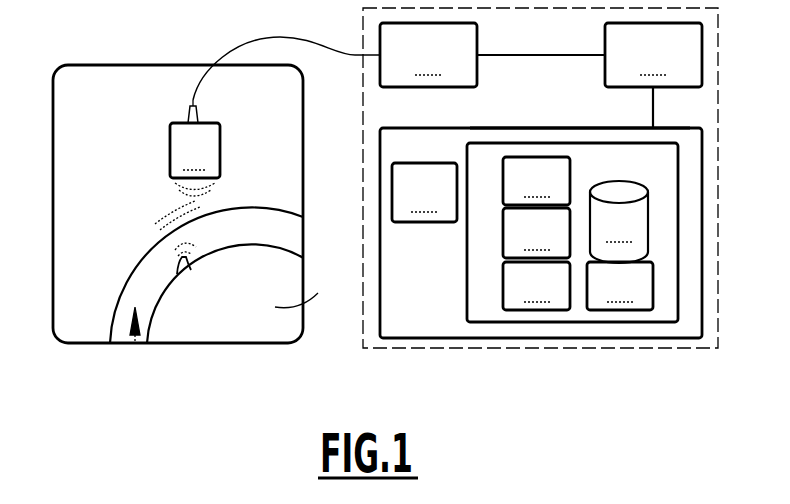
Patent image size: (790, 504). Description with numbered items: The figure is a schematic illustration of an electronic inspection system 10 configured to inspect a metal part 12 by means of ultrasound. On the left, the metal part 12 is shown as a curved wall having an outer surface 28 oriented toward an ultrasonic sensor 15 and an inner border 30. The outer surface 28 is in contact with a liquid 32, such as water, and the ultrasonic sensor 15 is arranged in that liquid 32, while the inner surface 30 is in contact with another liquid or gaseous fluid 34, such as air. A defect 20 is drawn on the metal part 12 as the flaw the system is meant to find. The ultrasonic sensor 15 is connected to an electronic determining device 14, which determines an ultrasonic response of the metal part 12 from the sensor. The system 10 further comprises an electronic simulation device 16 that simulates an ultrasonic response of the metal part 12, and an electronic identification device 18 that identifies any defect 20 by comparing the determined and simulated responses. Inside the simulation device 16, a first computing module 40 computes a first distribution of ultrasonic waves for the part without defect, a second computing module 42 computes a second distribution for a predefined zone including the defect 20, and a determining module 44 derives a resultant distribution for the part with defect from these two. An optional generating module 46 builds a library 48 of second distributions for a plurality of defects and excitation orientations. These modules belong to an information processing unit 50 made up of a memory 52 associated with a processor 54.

The electronic inspection system 10 is at (495, 350).
The metal part 12 is at (135, 343).
The electronic determining device 14 is at (492, 55).
The ultrasonic sensor 15 is at (267, 133).
The electronic simulation device 16 is at (517, 107).
The electronic identification device 18 is at (653, 75).
The defect 20 is at (200, 283).
The outer surface 28 is at (255, 208).
The inner border 30 is at (242, 245).
The liquid 32 is at (270, 123).
The gaseous fluid 34 is at (305, 282).
The first computing module 40 is at (536, 181).
The second computing module 42 is at (536, 233).
The determining module 44 is at (536, 286).
The generating module 46 is at (620, 286).
The library 48 is at (619, 222).
The information processing unit 50 is at (577, 128).
The memory 52 is at (467, 248).
The processor 54 is at (424, 192).